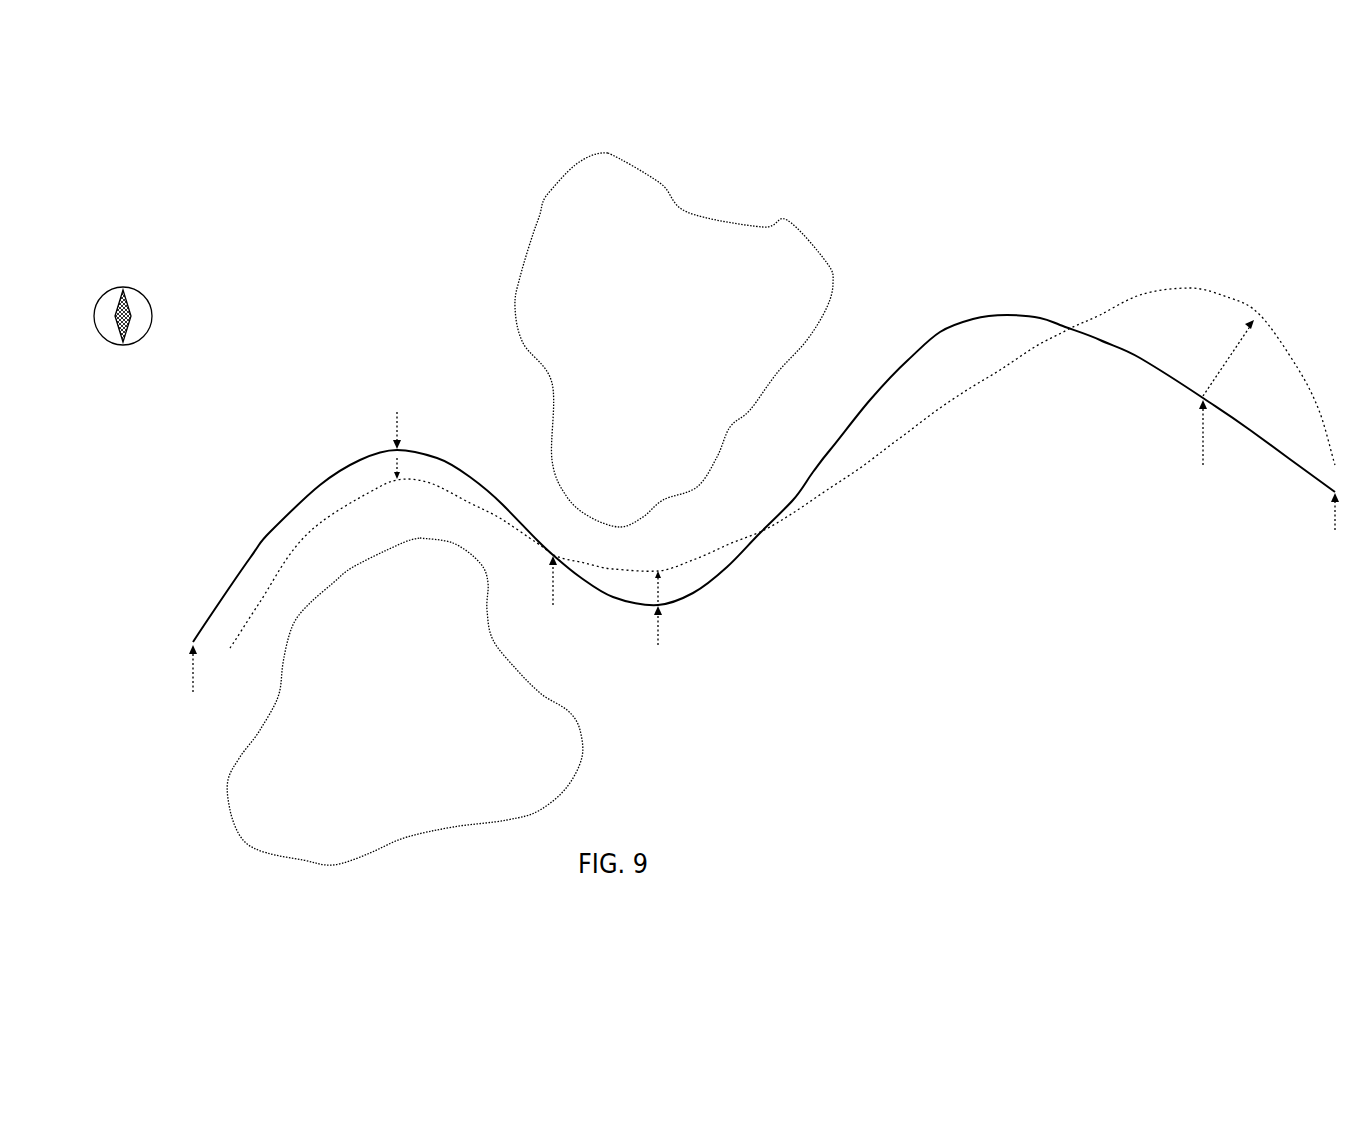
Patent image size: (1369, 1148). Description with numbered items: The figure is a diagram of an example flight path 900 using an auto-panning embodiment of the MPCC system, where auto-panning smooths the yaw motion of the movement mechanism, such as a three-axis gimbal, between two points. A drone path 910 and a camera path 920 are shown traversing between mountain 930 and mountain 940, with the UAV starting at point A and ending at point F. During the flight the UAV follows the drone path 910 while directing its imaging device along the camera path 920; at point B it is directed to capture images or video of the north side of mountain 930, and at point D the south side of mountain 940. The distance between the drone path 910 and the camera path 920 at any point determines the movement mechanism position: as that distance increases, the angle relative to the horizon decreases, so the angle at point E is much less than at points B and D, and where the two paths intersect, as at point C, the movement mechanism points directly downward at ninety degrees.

The flight path 900 is at (347, 150).
The drone path 910 is at (230, 565).
The camera path 920 is at (976, 410).
The mountain 930 is at (405, 701).
The mountain 940 is at (674, 340).